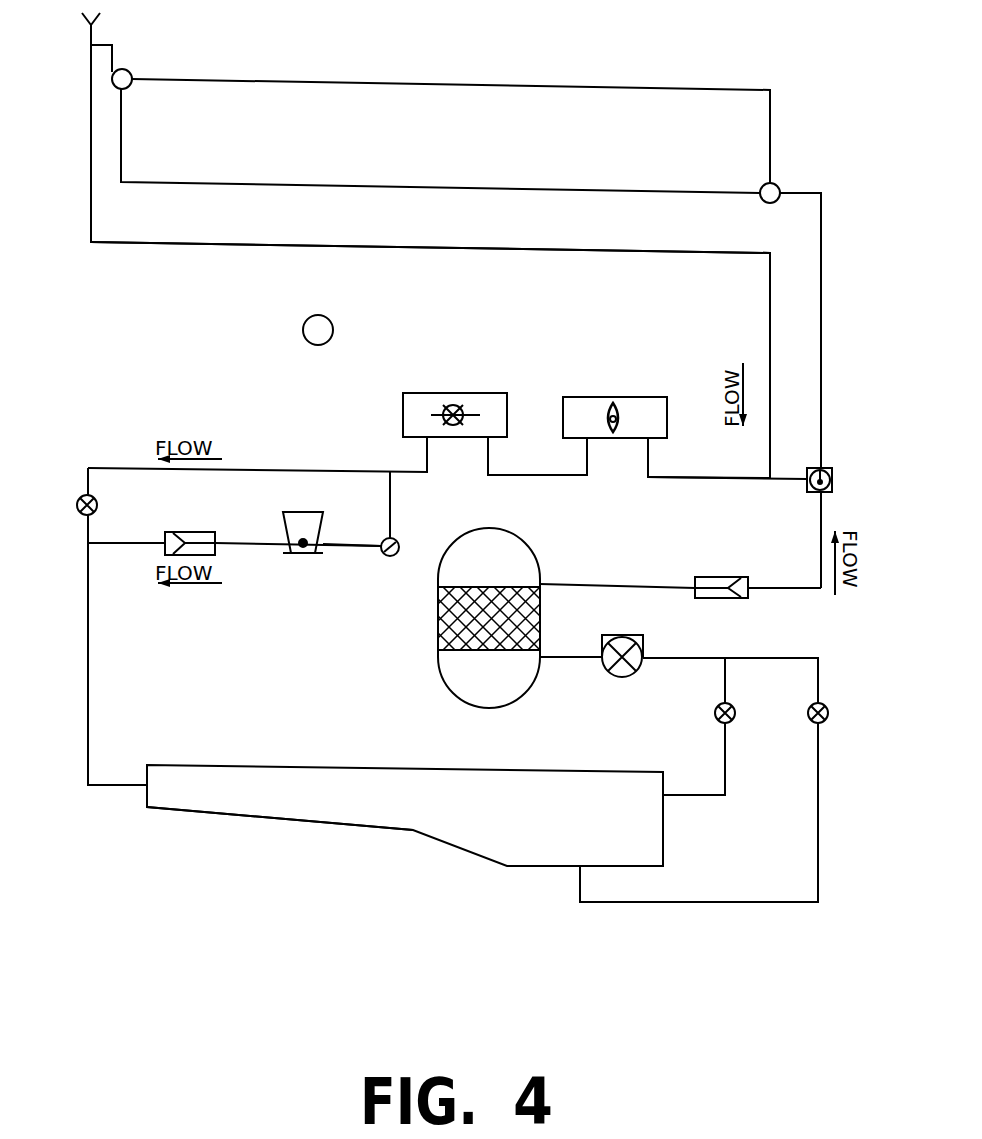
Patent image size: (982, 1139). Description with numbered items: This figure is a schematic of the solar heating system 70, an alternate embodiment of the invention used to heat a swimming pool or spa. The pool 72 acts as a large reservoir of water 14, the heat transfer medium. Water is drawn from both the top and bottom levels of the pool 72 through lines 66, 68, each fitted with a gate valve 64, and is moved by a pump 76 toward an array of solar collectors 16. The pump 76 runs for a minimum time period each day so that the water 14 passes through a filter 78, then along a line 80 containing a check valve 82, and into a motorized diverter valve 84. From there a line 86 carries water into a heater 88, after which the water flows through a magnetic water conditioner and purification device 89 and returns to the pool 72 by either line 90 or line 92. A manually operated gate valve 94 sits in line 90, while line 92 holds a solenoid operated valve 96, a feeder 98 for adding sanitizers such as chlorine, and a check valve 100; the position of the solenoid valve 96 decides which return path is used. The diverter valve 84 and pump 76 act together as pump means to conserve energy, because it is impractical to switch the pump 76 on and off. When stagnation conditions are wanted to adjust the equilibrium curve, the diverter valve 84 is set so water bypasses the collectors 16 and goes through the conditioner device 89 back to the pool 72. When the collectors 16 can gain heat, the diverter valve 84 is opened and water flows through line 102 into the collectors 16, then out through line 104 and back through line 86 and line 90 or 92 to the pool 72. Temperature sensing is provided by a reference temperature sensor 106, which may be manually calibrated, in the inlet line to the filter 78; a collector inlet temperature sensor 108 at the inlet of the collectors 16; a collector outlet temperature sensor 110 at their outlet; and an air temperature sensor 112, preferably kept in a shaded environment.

The water 14 is at (408, 819).
The solar collectors 16 is at (405, 80).
The gate valves 64 is at (807, 702).
The line 66 is at (728, 760).
The line 68 is at (639, 901).
The solar heating system 70 is at (184, 384).
The pool 72 is at (323, 824).
The pump 76 is at (622, 684).
The filter 78 is at (436, 633).
The line 80 is at (585, 579).
The check valve 82 is at (703, 573).
The motorized diverter valve 84 is at (806, 496).
The line 86 is at (678, 482).
The heater 88 is at (649, 395).
The magnetic water conditioner and purification device 89 is at (440, 391).
The line 90 is at (335, 466).
The line 92 is at (355, 551).
The manually operated gate valve 94 is at (75, 509).
The solenoid operated valve 96 is at (398, 537).
The feeder 98 is at (302, 557).
The check valve 100 is at (196, 529).
The line 102 is at (824, 303).
The line 104 is at (217, 246).
The reference temperature sensor 106 is at (568, 662).
The collector inlet temperature sensor 108 is at (777, 183).
The collector outlet temperature sensor 110 is at (121, 66).
The air temperature sensor 112 is at (336, 318).